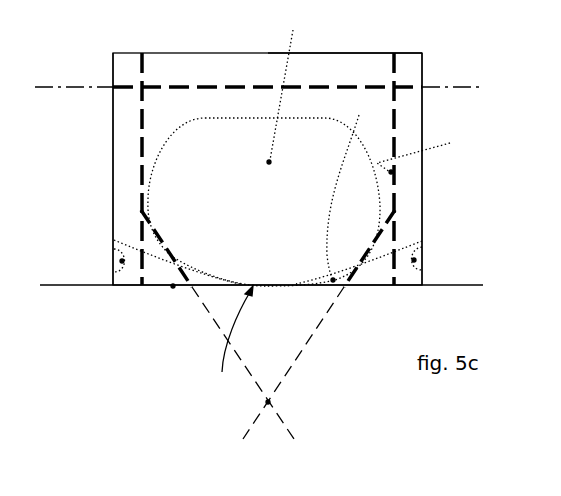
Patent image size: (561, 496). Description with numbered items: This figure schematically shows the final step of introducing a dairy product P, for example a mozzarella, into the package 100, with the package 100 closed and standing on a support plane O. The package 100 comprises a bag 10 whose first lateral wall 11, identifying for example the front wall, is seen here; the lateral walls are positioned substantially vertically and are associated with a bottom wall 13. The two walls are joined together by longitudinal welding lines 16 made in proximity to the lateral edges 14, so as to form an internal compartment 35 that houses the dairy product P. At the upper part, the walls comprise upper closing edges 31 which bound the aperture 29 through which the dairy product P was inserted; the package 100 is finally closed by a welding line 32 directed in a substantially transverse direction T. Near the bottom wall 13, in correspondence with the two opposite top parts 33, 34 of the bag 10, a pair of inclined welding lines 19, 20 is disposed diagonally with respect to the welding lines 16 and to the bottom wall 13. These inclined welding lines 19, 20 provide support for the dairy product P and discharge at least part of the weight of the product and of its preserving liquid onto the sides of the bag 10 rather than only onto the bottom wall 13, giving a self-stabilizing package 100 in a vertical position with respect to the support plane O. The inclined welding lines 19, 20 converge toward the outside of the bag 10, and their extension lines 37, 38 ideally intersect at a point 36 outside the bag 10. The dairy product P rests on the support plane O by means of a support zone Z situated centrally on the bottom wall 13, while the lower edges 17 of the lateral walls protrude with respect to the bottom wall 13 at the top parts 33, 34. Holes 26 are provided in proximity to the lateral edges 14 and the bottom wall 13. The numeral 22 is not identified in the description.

The bag 10 is at (458, 58).
The package 100 is at (72, 157).
The first lateral wall 11 is at (197, 90).
The bottom wall 13 is at (350, 187).
The lateral edge 14 is at (129, 210).
The welding line 16 is at (140, 122).
The lower edge 17 is at (174, 288).
The inclined welding line 19 is at (168, 256).
The inclined welding line 20 is at (367, 256).
The top panel 22 is at (25, 6).
The hole 26 is at (113, 268).
The aperture 29 is at (335, 52).
The upper closing edge 31 is at (222, 65).
The welding line 32 is at (366, 85).
The top part 33 is at (110, 248).
The top part 34 is at (427, 249).
The internal compartment 35 is at (427, 153).
The intersection point 36 is at (271, 403).
The extension line 37 is at (251, 375).
The extension line 38 is at (302, 357).
The support plane O is at (52, 285).
The dairy product P is at (284, 82).
The transverse direction T is at (55, 87).
The support zone Z is at (234, 343).